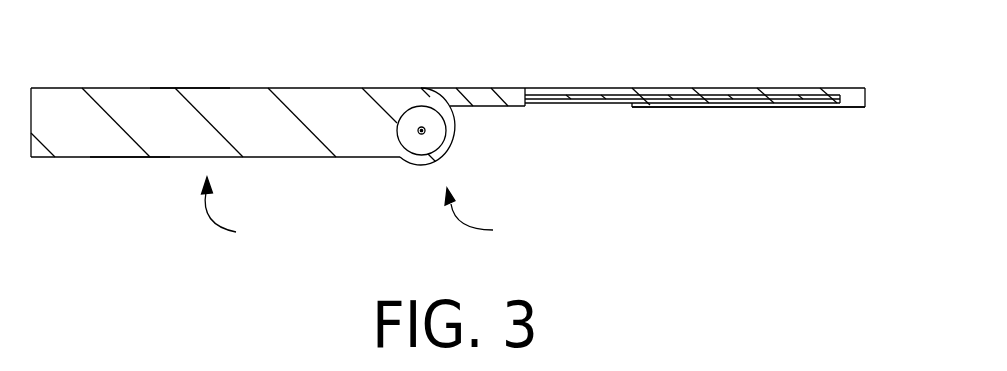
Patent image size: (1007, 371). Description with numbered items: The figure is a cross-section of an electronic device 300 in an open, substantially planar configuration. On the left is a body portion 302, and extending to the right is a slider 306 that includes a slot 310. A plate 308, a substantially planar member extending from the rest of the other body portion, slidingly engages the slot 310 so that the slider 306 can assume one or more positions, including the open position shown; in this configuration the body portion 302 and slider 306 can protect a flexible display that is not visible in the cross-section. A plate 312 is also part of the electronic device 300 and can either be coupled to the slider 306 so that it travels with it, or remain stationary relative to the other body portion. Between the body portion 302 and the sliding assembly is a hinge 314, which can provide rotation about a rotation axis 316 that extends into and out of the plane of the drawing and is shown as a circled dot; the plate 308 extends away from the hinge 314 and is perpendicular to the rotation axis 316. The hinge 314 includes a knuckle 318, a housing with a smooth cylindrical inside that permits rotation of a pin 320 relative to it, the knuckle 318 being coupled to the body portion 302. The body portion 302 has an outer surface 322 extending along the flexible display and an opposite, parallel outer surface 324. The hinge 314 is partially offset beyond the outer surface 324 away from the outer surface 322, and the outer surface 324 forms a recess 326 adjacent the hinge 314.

The electronic device 300 is at (857, 222).
The body portion 302 is at (107, 106).
The slider 306 is at (683, 90).
The plate 308 is at (609, 103).
The slot 310 is at (802, 107).
The plate 312 is at (560, 88).
The hinge 314 is at (491, 215).
The rotation axis 316 is at (418, 135).
The knuckle 318 is at (453, 142).
The pin 320 is at (407, 107).
The outer surface 322 is at (185, 88).
The outer surface 324 is at (128, 158).
The recess 326 is at (241, 214).